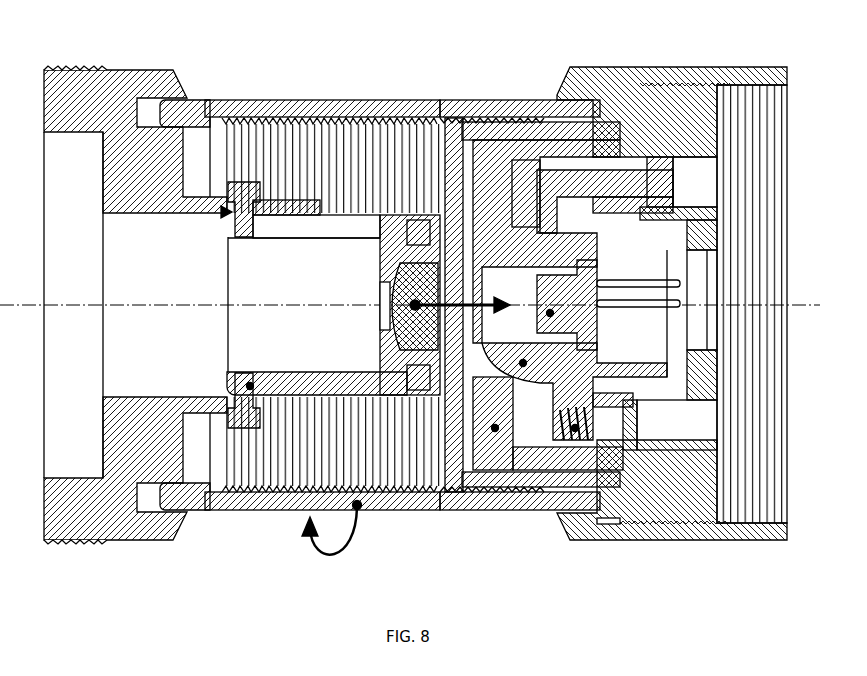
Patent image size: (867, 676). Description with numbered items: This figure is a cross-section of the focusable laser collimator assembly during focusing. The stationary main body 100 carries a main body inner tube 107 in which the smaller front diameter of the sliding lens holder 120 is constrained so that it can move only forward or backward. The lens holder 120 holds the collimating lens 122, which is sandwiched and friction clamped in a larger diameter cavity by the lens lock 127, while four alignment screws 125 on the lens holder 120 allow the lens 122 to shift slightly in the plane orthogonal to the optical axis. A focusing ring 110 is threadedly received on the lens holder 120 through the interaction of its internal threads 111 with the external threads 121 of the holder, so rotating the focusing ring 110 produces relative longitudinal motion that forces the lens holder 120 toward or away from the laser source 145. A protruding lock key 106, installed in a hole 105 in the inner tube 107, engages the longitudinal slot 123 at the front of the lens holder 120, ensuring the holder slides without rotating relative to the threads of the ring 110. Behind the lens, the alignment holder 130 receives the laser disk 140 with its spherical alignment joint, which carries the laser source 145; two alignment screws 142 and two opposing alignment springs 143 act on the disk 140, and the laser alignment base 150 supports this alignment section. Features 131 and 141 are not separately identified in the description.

The main body 100 is at (87, 500).
The hole 105 is at (222, 213).
The lock key 106 is at (243, 193).
The main body inner tube 107 is at (270, 206).
The focusing ring 110 is at (195, 500).
The internal threads 111 is at (357, 118).
The sliding lens holder 120 is at (251, 512).
The external threads 121 is at (463, 487).
The collimating lens 122 is at (415, 512).
The longitudinal slot 123 is at (302, 237).
The alignment screws 125 is at (417, 230).
The lens lock 127 is at (453, 247).
The alignment holder 130 is at (497, 510).
The lens element 131 is at (511, 226).
The laser disk 140 is at (525, 512).
The thread connection 141 is at (520, 230).
The alignment screws 142 is at (653, 180).
The alignment springs 143 is at (580, 540).
The laser source 145 is at (553, 510).
The laser alignment base 150 is at (662, 478).